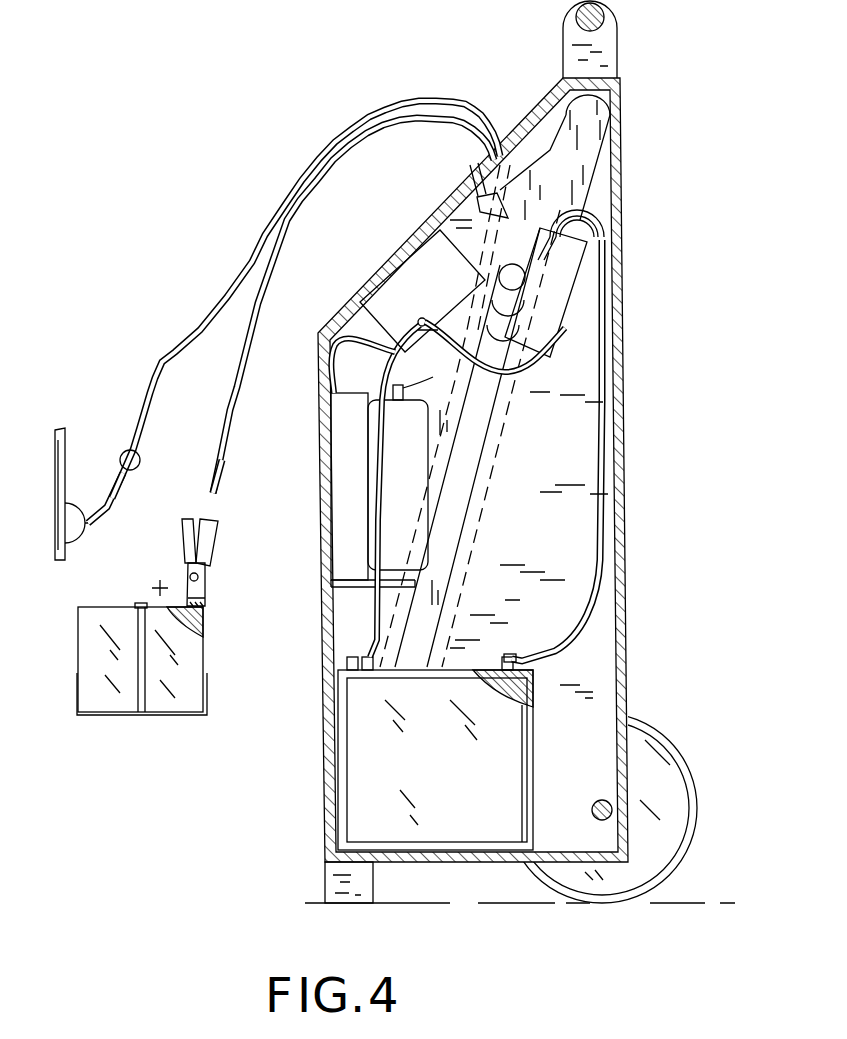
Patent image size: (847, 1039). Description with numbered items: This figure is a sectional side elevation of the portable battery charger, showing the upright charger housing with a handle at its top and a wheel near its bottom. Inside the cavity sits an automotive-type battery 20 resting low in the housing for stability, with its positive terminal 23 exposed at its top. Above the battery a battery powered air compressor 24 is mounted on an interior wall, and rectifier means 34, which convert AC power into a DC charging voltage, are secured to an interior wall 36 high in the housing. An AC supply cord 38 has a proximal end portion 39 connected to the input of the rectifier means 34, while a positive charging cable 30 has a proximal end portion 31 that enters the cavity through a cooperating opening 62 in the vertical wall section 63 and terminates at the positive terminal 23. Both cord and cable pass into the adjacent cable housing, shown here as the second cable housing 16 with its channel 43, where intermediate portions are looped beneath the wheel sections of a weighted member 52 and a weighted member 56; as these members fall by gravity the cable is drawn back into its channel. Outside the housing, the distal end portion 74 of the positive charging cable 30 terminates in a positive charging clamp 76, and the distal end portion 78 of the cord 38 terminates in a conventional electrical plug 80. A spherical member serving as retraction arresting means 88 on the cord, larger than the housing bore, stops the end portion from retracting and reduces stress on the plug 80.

The second cable housing 16 is at (517, 283).
The automotive-type battery 20 is at (537, 783).
The positive terminal 23 is at (517, 650).
The battery powered air compressor 24 is at (388, 478).
The positive charging cable 30 is at (280, 258).
The proximal end portion 31 is at (587, 600).
The rectifier means 34 is at (420, 263).
The interior wall 36 is at (482, 188).
The AC supply cord 38 is at (257, 243).
The proximal end portion 39 is at (330, 332).
The channel 43 is at (447, 440).
The weighted member 52 is at (547, 347).
The weighted member 56 is at (533, 228).
The cooperating opening 62 is at (603, 127).
The vertical wall section 63 is at (569, 388).
The distal end portion 74 is at (217, 503).
The positive charging clamp 76 is at (207, 584).
The distal end portion 78 is at (123, 493).
The electrical plug 80 is at (83, 503).
The retraction arresting means 88 is at (128, 450).